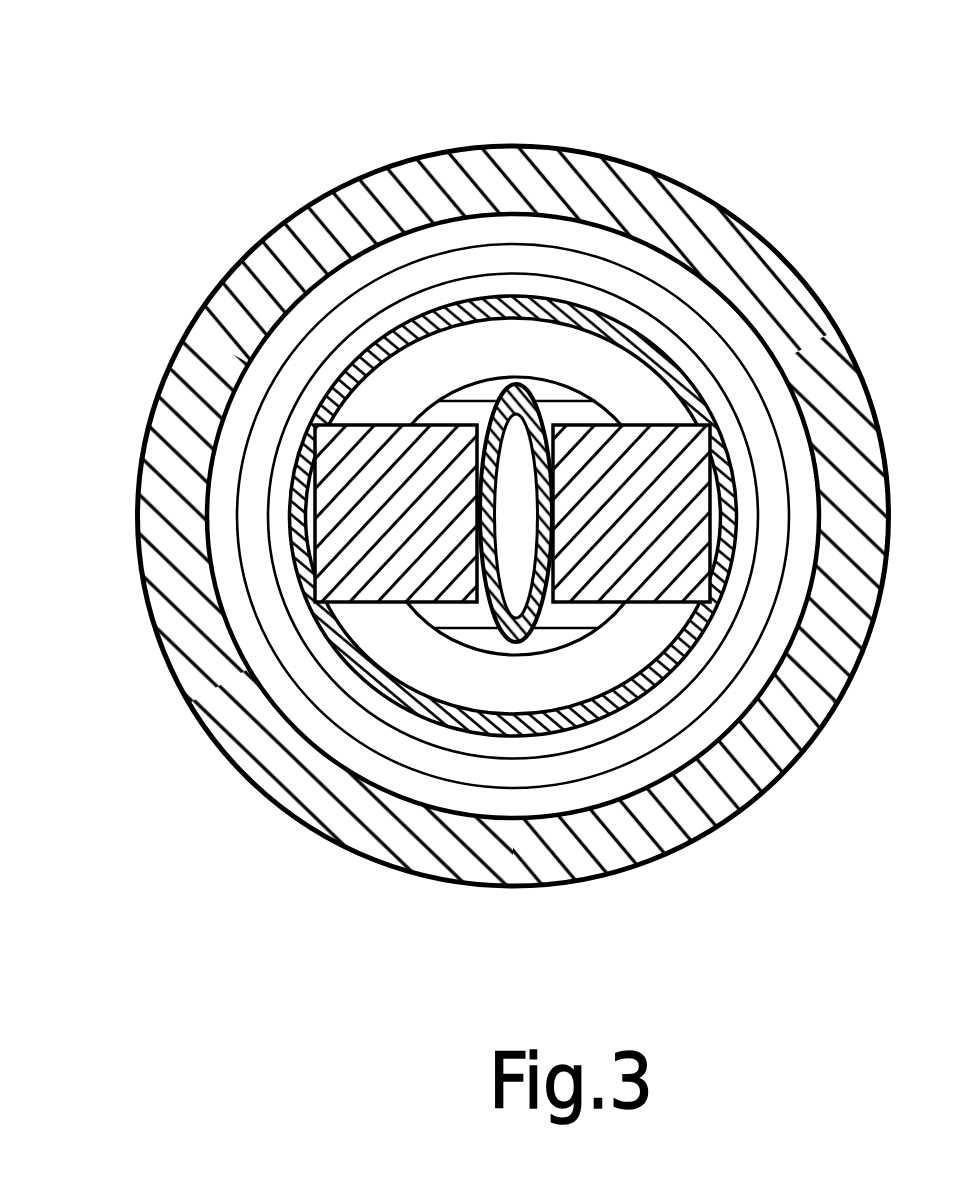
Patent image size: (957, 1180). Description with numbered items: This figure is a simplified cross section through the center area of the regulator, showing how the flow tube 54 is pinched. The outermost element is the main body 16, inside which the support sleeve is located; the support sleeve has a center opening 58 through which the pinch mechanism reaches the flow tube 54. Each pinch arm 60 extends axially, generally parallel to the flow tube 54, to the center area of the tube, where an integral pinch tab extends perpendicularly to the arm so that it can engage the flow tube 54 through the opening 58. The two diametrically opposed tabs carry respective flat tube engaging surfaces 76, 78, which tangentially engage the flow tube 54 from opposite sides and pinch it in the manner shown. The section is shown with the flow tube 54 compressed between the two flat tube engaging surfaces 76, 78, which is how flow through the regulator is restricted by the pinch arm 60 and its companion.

The main body 16 is at (183, 652).
The pinch arm 60 is at (290, 243).
The center opening 58 is at (657, 460).
The flow tube 54 is at (517, 385).
The flat tube engaging surface 76 is at (478, 500).
The flat tube engaging surface 78 is at (550, 523).